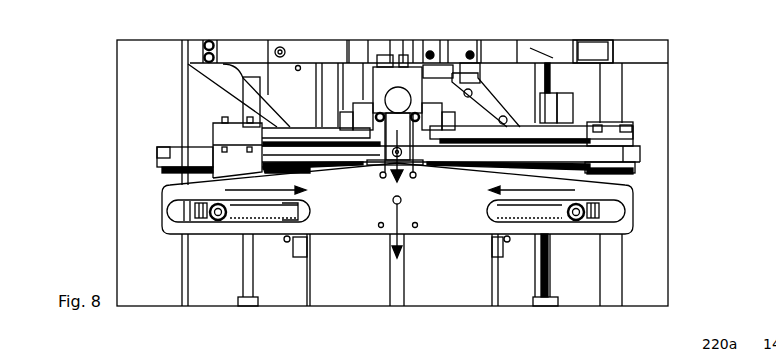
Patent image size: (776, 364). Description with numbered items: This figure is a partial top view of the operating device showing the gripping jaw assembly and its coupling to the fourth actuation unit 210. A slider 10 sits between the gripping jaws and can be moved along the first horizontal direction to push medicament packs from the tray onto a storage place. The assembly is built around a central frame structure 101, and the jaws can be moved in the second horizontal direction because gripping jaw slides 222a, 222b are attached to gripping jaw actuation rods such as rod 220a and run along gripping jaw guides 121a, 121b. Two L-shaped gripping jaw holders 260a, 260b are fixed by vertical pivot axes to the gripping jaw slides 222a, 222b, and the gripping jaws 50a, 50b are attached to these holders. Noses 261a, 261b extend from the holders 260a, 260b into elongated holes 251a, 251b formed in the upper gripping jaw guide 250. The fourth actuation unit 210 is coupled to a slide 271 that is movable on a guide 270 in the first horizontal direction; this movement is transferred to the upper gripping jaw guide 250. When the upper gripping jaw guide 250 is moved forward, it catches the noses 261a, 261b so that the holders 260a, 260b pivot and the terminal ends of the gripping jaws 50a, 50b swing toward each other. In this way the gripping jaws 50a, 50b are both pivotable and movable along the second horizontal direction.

The slider 10 is at (397, 273).
The gripping jaw 50a is at (305, 272).
The gripping jaw 50b is at (493, 268).
The central frame structure 101 is at (187, 180).
The gripping jaw guide 121a is at (182, 167).
The gripping jaw guide 121b is at (635, 175).
The fourth actuation unit 210 is at (620, 63).
The gripping jaw actuation rod 220a is at (185, 153).
The gripping jaw slide 222a is at (240, 164).
The gripping jaw slide 222b is at (575, 130).
The upper gripping jaw guide 250 is at (357, 203).
The elongated hole 251a is at (248, 223).
The elongated hole 251b is at (612, 222).
The L-shaped gripping jaw holder 260a is at (292, 212).
The L-shaped gripping jaw holder 260b is at (546, 297).
The nose 261a is at (218, 223).
The nose 261b is at (578, 217).
The guide 270 is at (637, 138).
The slide 271 is at (383, 145).